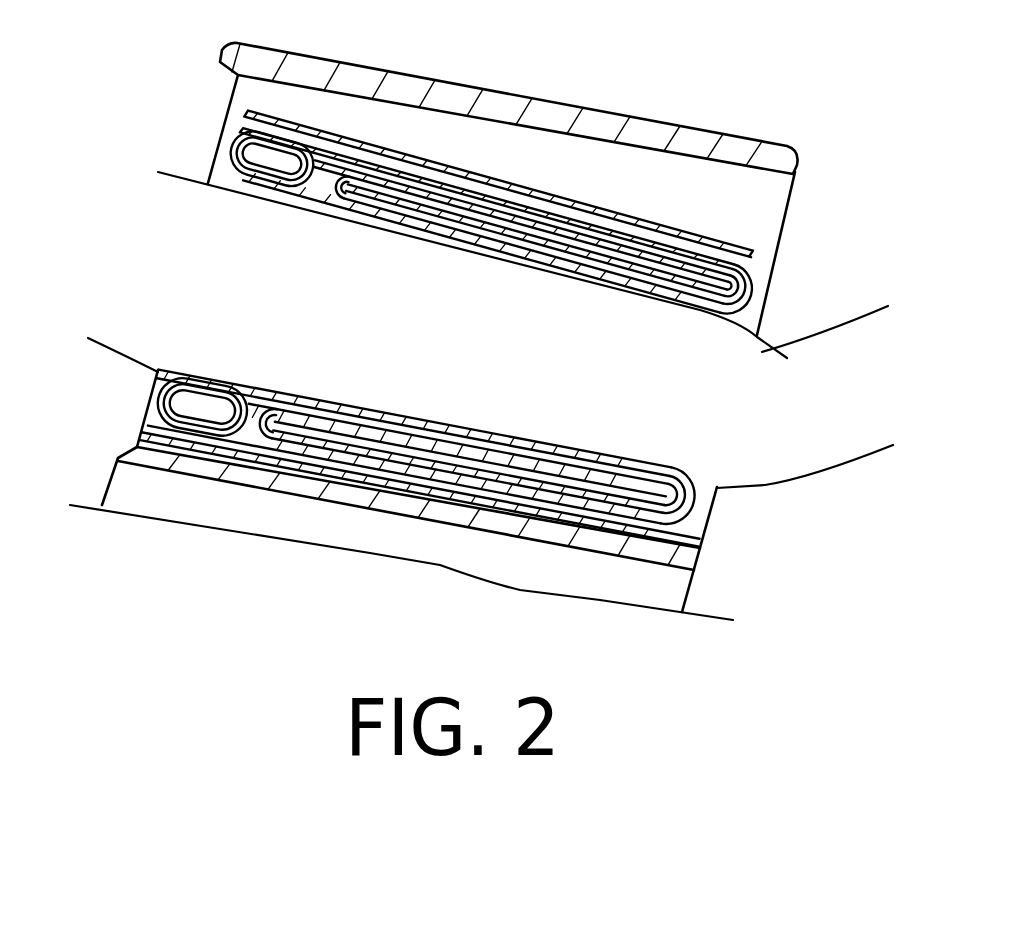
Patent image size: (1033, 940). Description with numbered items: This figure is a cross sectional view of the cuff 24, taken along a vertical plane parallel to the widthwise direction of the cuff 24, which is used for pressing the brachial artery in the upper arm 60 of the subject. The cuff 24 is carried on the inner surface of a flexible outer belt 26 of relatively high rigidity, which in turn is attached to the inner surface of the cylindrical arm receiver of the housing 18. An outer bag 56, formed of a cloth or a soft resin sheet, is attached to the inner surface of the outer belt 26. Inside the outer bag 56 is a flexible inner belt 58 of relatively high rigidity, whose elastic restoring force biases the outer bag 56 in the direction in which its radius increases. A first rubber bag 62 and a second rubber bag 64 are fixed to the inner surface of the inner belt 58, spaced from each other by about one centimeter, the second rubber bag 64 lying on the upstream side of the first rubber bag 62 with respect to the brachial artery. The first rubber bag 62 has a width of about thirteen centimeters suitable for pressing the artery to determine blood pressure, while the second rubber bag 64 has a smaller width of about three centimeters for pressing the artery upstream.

The housing 18 is at (607, 122).
The cuff 24 is at (772, 266).
The outer belt 26 is at (380, 153).
The outer bag 56 is at (337, 152).
The inner belt 58 is at (713, 238).
The upper arm 60 is at (183, 252).
The first rubber bag 62 is at (740, 295).
The second rubber bag 64 is at (222, 147).